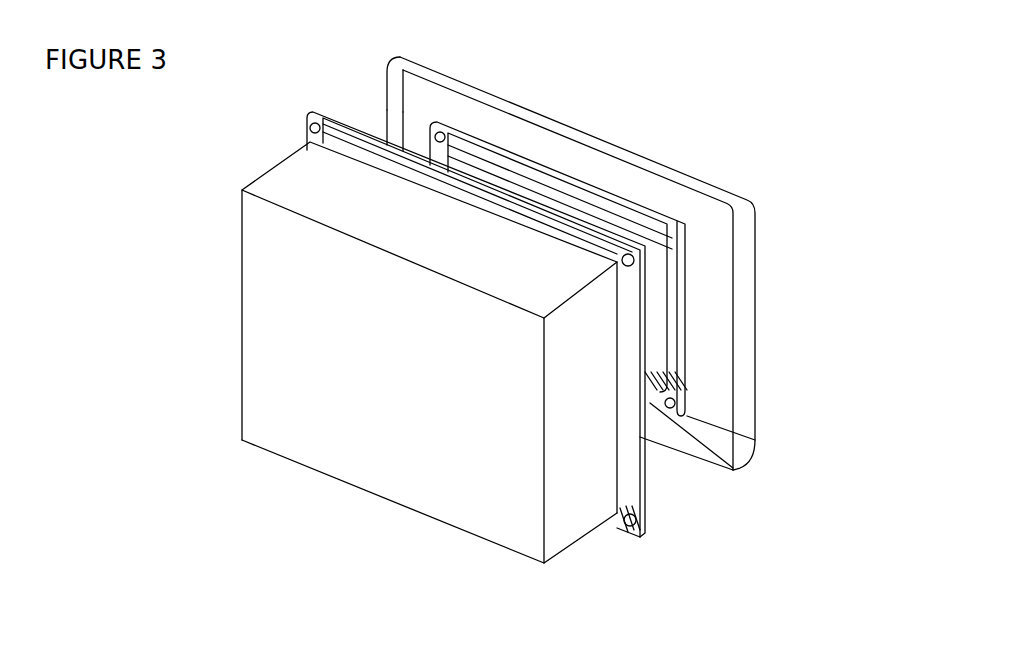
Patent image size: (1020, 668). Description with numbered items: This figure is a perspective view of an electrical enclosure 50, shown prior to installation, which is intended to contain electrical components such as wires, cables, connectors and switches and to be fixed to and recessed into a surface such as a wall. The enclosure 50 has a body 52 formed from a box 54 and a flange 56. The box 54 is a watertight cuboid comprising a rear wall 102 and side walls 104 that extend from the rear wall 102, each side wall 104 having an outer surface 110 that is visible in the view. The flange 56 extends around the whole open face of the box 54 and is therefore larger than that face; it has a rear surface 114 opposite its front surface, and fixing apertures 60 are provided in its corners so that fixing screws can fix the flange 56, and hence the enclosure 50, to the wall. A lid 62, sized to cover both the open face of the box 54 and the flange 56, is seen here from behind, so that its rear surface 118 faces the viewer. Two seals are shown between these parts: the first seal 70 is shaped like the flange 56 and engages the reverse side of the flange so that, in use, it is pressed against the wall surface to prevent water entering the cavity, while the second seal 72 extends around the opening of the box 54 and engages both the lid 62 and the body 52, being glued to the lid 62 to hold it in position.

The electrical enclosure 50 is at (734, 167).
The body 52 is at (528, 523).
The box 54 is at (283, 303).
The flange 56 is at (637, 435).
The fixing apertures 60 is at (308, 128).
The lid 62 is at (430, 103).
The first seal 70 is at (620, 475).
The second seal 72 is at (392, 145).
The rear wall 102 is at (288, 380).
The side walls 104 is at (290, 185).
The outer surface 110 is at (568, 400).
The rear surface 114 is at (627, 338).
The rear surface 118 is at (514, 133).